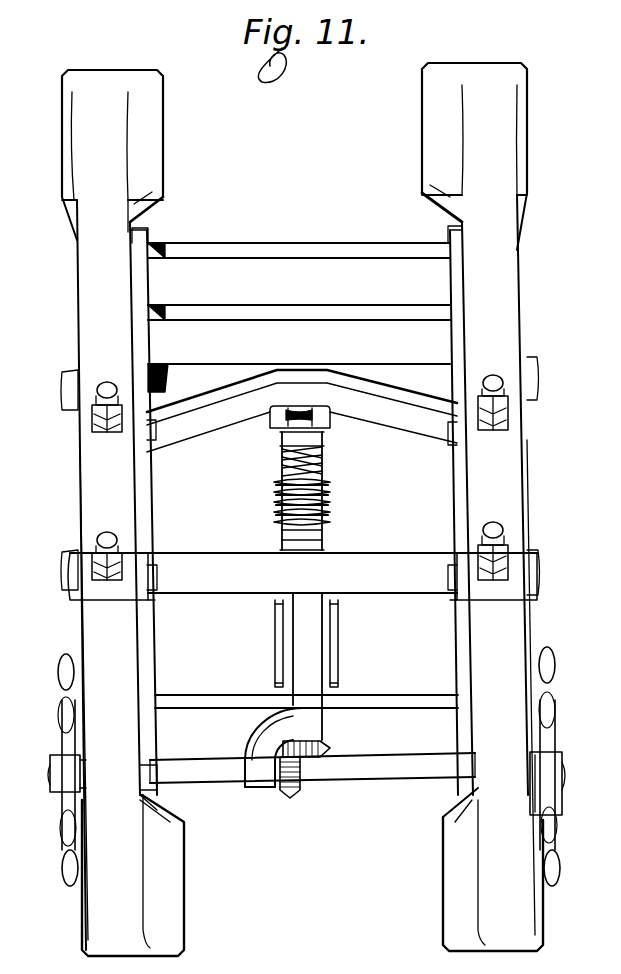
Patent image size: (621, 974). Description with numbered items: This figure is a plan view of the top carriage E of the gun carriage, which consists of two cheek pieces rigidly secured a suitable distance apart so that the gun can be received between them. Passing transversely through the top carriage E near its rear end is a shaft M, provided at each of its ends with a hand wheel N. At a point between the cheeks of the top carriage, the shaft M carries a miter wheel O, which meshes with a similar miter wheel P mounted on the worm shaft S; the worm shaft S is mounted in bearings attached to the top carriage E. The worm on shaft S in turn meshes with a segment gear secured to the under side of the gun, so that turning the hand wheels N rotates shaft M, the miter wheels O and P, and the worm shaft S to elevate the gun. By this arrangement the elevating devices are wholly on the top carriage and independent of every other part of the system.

The top carriage E is at (92, 623).
The worm shaft S is at (276, 500).
The miter wheel P is at (328, 748).
The miter wheel O is at (294, 796).
The shaft M is at (412, 774).
The hand wheels N is at (62, 806).